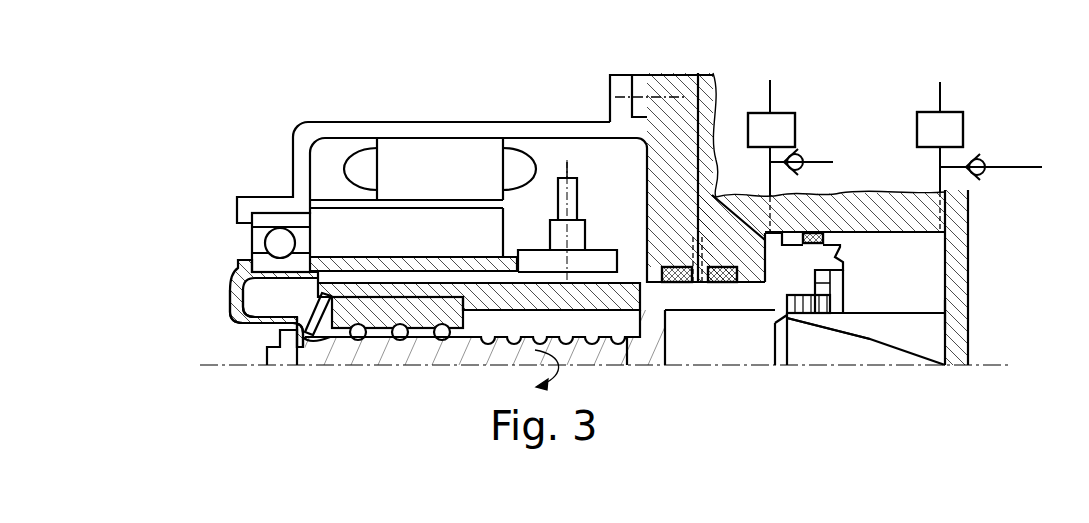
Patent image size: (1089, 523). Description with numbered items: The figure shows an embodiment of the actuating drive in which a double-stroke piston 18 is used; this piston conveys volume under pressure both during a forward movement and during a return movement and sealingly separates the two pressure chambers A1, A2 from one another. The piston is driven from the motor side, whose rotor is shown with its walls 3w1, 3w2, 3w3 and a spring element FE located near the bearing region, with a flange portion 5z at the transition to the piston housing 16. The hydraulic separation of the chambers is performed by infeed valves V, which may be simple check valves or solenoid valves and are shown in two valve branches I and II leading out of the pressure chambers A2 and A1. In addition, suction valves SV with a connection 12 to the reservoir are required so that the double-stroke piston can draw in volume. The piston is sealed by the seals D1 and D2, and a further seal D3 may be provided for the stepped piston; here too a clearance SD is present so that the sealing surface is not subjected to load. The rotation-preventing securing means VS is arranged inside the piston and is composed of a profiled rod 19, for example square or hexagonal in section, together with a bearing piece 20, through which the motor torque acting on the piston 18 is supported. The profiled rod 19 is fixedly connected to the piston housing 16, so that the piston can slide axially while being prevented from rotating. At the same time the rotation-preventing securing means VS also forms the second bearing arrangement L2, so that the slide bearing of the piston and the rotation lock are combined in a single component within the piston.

The wall 3w1 is at (267, 275).
The wall 3w2 is at (260, 325).
The wall 3w3 is at (232, 302).
The spring element FE is at (230, 283).
The cylinder housing flange 5z is at (670, 125).
The connection to reservoir 12 is at (714, 112).
The first valve I is at (940, 152).
The second valve II is at (772, 153).
The infeed valves V is at (796, 130).
The suction valve SV is at (803, 154).
The pressure chamber A2 is at (759, 172).
The pressure chamber A1 is at (958, 302).
The seal 1 D1 is at (677, 283).
The seal 2 D2 is at (722, 283).
The seal 3 D3 is at (815, 232).
The clearance of piston with respect to seal SD is at (818, 232).
The double-stroke piston 18 is at (850, 272).
The bearing piece 20 is at (855, 307).
The 2nd bearing on rotation-preventing securing means L2 is at (802, 316).
The profiled rod 19 is at (917, 340).
The rotation-preventing securing means VS is at (847, 352).
The piston housing 16 is at (955, 303).